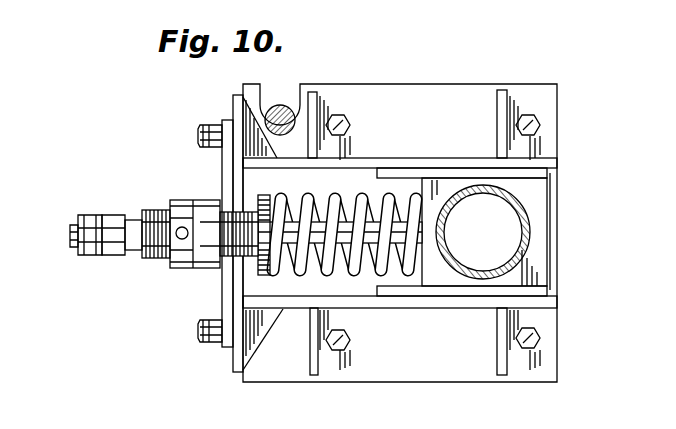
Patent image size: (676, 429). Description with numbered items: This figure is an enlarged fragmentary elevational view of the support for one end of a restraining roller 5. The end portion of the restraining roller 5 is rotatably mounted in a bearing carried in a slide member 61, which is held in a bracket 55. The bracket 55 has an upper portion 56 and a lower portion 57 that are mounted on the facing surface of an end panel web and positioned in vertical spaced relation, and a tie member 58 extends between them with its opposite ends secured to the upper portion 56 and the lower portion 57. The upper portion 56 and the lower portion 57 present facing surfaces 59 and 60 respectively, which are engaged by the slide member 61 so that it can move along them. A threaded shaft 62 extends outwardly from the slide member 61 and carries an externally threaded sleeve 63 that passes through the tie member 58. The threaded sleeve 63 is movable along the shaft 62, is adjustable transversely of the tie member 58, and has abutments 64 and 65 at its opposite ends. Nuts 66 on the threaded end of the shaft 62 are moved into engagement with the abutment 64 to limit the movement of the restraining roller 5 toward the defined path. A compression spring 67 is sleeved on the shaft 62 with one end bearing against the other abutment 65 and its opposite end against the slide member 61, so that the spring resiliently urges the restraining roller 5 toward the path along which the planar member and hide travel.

The restraining roller 5 is at (530, 222).
The bracket 55 is at (562, 80).
The upper portion 56 is at (544, 108).
The lower portion 57 is at (545, 330).
The tie member 58 is at (222, 290).
The facing surface 59 is at (538, 186).
The facing surface 60 is at (534, 296).
The slide member 61 is at (549, 228).
The threaded shaft 62 is at (70, 240).
The externally threaded sleeve 63 is at (167, 187).
The abutment 64 is at (114, 246).
The abutment 65 is at (270, 202).
The nut 66 is at (110, 220).
The compression spring 67 is at (378, 270).